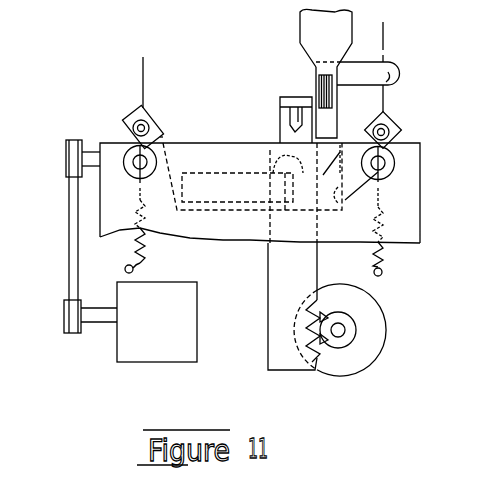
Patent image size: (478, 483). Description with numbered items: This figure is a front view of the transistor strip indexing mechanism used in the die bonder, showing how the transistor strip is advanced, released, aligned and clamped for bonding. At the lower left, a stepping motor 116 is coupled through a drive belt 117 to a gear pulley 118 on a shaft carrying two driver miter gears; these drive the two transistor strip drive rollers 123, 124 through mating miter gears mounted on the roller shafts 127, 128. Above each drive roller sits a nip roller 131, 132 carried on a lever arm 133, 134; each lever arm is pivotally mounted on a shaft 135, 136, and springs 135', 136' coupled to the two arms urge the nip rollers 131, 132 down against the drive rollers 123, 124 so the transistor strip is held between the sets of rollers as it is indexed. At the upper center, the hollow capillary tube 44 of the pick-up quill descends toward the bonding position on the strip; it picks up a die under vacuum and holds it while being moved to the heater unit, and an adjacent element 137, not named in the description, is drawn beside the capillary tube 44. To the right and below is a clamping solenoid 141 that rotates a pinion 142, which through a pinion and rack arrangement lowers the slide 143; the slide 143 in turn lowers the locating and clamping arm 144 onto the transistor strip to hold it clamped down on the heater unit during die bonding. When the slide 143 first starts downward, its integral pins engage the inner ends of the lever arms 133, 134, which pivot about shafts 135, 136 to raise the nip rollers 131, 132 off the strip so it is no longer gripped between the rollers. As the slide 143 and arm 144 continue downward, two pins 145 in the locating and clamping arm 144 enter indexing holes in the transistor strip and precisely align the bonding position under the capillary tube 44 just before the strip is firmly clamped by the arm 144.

The capillary tube 44 is at (317, 85).
The stepping motor 116 is at (162, 358).
The drive belt 117 is at (68, 252).
The gear pulley 118 is at (66, 145).
The transistor strip drive roller 123 is at (163, 137).
The transistor strip drive roller 124 is at (392, 140).
The roller shaft 127 is at (143, 183).
The roller shaft 128 is at (433, 160).
The nip roller 131 is at (133, 115).
The nip roller 132 is at (392, 121).
The lever arm 133 is at (151, 108).
The lever arm 134 is at (375, 121).
The shaft 135 is at (252, 176).
The spring 135' is at (115, 230).
The shaft 136 is at (349, 191).
The spring 136' is at (403, 232).
The feed chute 137 is at (335, 103).
The clamping solenoid 141 is at (386, 316).
The pinion 142 is at (328, 352).
The slide 143 is at (270, 160).
The locating and clamping arm 144 is at (302, 97).
The pin 145 is at (283, 122).